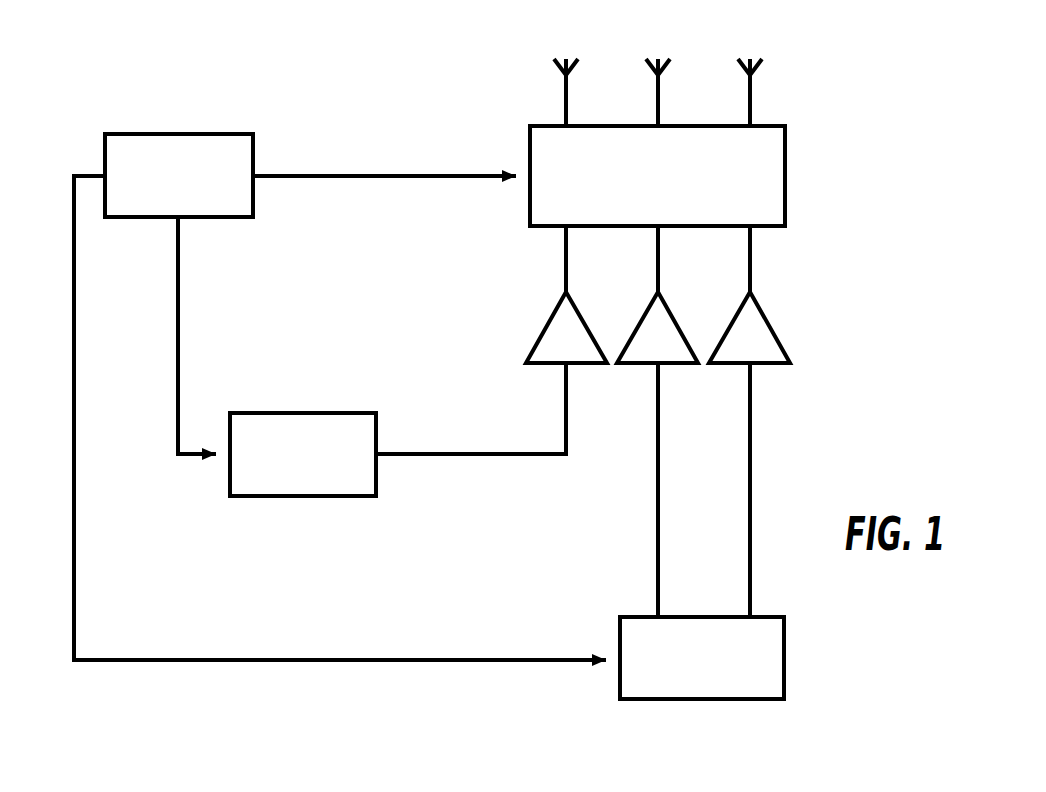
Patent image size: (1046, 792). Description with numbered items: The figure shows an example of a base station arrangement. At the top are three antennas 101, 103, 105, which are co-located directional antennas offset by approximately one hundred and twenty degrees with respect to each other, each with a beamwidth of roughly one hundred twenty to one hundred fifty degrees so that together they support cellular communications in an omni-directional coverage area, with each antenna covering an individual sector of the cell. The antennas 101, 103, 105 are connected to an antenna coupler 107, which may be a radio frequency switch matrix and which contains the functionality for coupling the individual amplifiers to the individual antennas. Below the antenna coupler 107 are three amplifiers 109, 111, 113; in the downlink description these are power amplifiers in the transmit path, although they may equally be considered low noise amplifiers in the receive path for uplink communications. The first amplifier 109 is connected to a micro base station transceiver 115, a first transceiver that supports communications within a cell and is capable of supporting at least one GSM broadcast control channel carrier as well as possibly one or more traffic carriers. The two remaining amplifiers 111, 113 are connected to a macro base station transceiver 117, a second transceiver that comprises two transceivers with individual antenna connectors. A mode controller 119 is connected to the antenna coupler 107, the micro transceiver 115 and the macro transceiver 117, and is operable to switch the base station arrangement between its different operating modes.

The antenna 101 is at (557, 74).
The antenna 103 is at (662, 56).
The antenna 105 is at (765, 70).
The antenna coupler 107 is at (787, 173).
The amplifier 109 is at (546, 320).
The amplifier 111 is at (670, 312).
The amplifier 113 is at (765, 320).
The micro base station transceiver 115 is at (303, 497).
The macro base station transceiver 117 is at (723, 700).
The mode controller 119 is at (177, 133).